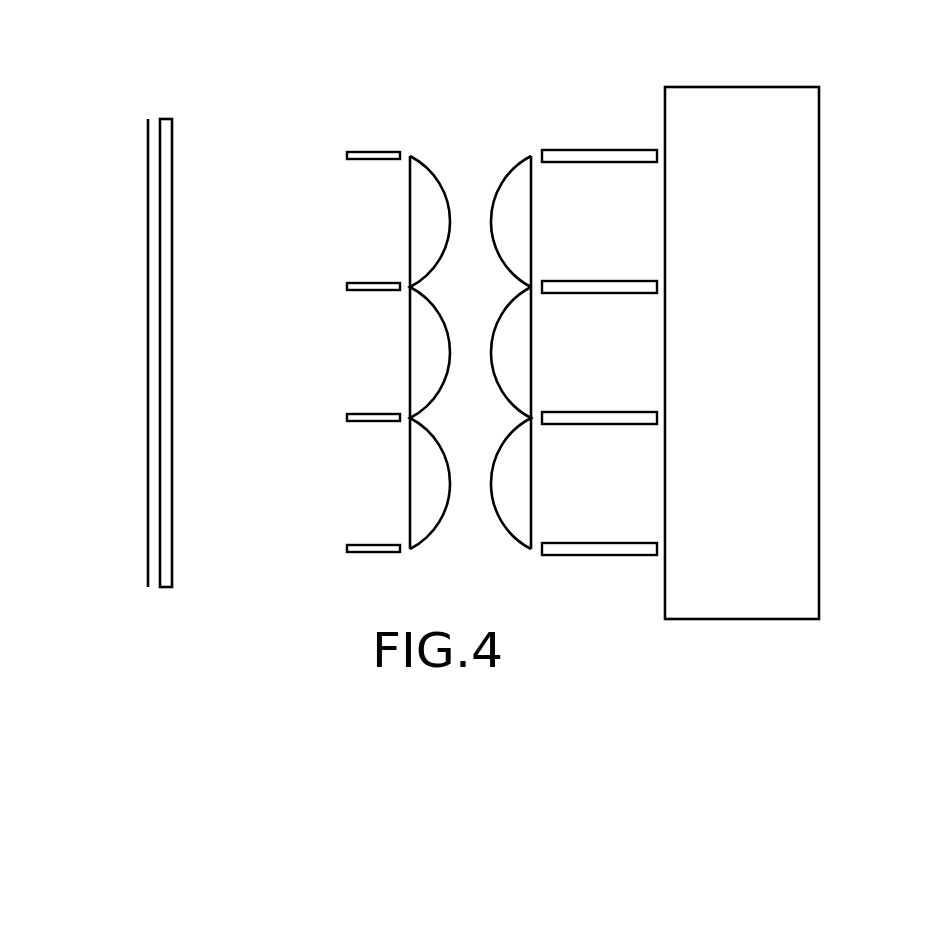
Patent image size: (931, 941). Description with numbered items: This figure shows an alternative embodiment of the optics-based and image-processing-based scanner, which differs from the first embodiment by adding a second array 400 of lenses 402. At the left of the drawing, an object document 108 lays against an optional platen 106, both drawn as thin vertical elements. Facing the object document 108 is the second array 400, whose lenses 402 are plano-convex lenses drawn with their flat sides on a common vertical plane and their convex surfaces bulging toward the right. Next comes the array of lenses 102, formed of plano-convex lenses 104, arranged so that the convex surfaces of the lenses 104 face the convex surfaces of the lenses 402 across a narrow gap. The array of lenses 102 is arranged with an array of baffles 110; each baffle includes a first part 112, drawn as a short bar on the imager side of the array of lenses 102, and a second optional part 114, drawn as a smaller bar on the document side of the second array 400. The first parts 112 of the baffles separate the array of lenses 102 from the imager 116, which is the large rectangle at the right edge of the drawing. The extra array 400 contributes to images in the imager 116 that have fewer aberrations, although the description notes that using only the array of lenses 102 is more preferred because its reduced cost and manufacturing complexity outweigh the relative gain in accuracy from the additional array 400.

The array of lenses 102 is at (560, 291).
The plano-convex lens 104 is at (520, 241).
The platen 106 is at (173, 182).
The object document 108 is at (147, 145).
The array of baffles 110 is at (599, 282).
The first part of baffle 112 is at (593, 163).
The second part of baffle 114 is at (370, 152).
The imager 116 is at (767, 87).
The second array of lenses 400 is at (455, 292).
The lens 402 is at (427, 253).